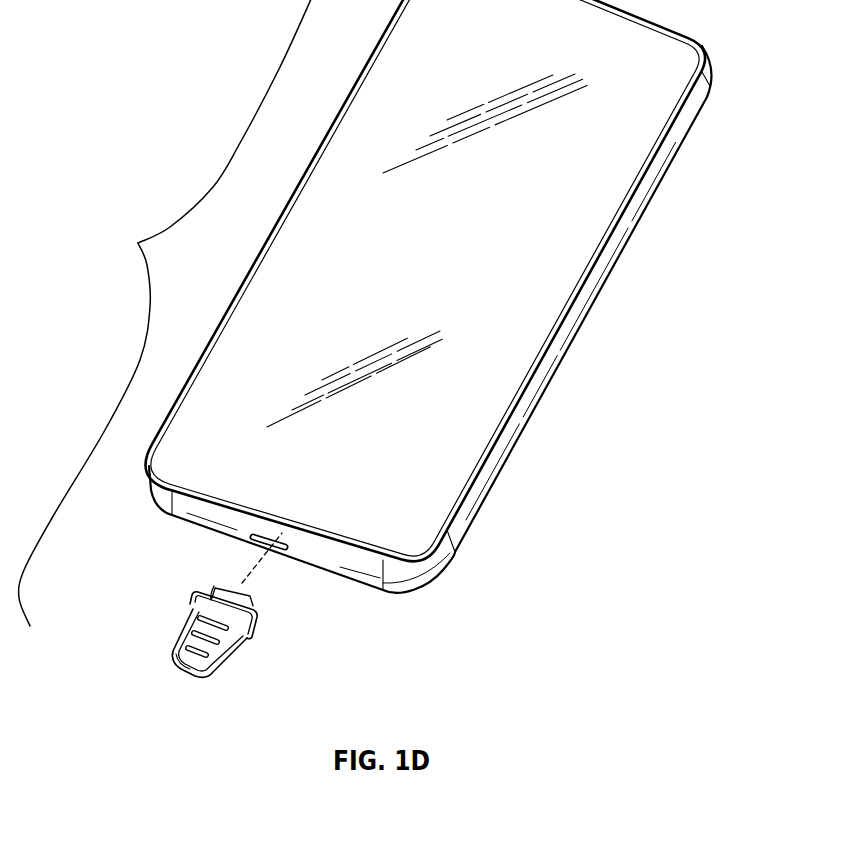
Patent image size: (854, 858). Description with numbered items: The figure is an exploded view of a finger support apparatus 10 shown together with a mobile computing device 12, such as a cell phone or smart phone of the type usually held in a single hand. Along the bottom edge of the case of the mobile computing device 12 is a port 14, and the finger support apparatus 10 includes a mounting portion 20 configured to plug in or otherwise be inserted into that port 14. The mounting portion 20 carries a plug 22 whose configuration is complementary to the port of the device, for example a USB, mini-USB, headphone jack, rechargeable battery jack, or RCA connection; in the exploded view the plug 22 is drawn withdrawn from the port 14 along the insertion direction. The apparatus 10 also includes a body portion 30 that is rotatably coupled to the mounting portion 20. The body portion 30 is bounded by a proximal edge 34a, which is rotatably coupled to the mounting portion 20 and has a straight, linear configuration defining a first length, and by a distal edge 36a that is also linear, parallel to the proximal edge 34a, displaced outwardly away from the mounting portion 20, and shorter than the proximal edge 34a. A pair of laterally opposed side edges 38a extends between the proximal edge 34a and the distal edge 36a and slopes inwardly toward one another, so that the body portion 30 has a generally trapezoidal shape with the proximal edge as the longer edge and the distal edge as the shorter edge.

The finger support apparatus 10 is at (86, 625).
The mobile computing device 12 is at (545, 333).
The port 14 is at (274, 540).
The mounting portion 20 is at (219, 625).
The plug 22 is at (228, 592).
The body portion 30 is at (206, 650).
The proximal edge 34a is at (192, 606).
The distal edge 36a is at (187, 672).
The lateral side edges 38a is at (233, 660).